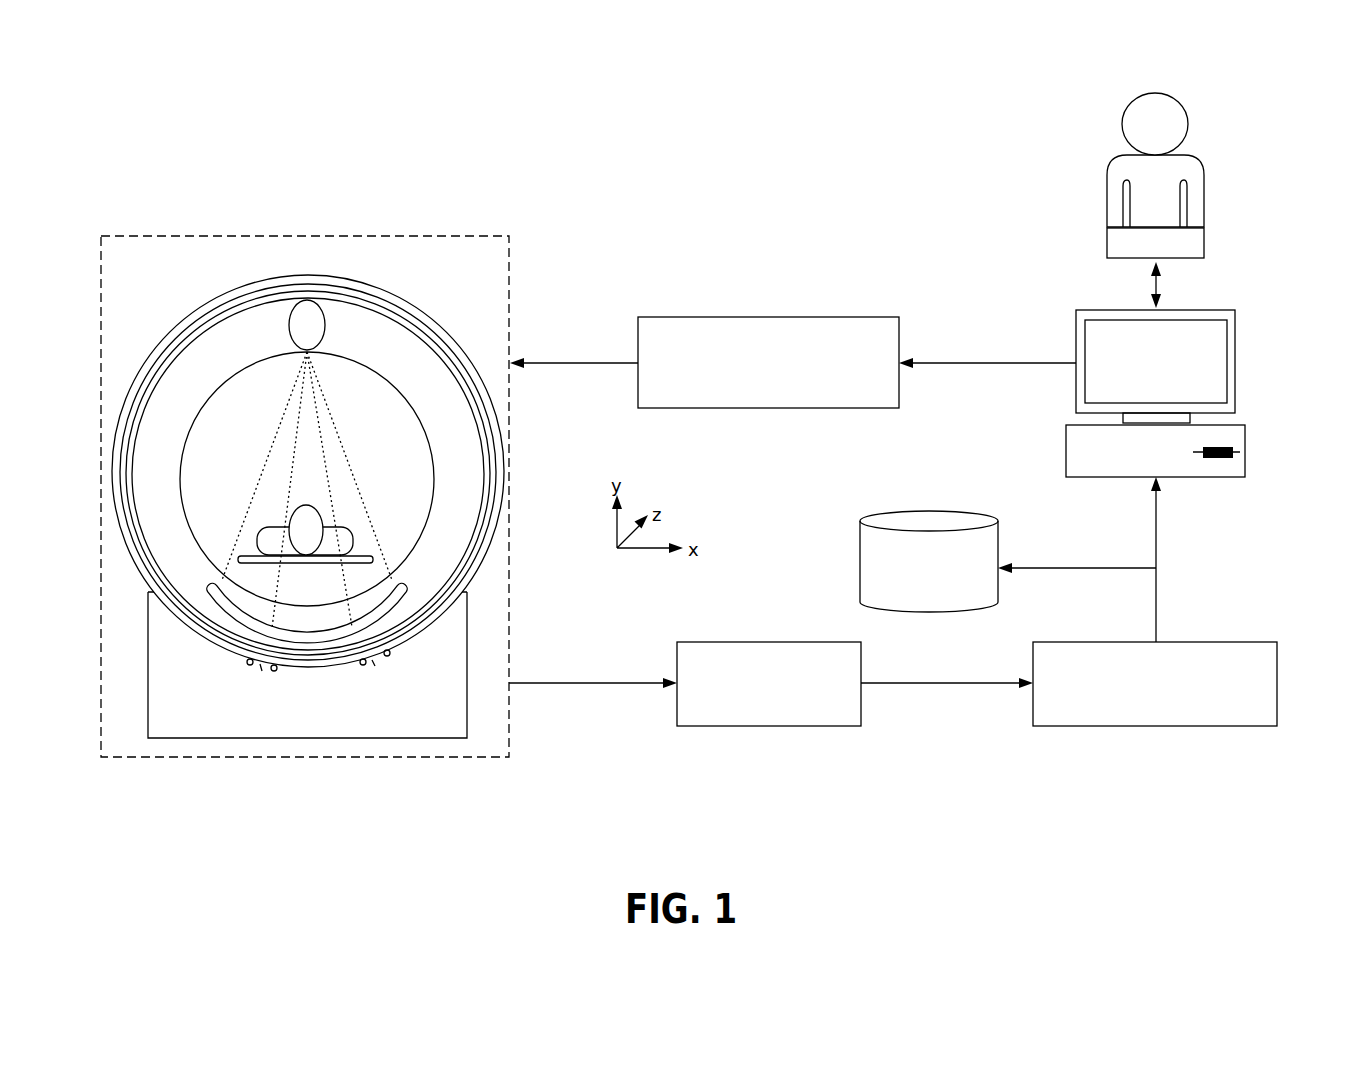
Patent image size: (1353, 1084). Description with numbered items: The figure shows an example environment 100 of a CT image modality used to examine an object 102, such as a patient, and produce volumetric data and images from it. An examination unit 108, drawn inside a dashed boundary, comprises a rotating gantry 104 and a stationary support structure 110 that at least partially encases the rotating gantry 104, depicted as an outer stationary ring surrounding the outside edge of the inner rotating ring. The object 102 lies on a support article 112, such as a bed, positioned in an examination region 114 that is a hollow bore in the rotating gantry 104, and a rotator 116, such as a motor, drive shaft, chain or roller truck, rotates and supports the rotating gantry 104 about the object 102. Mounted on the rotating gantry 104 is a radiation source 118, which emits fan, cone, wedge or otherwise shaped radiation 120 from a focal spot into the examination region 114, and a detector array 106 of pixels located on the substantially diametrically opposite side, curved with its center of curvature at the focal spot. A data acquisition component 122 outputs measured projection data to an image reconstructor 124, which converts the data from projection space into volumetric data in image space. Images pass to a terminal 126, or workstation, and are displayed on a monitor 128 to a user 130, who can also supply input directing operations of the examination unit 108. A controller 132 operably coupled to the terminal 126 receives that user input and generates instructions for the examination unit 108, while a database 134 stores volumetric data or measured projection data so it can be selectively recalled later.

The example environment 100 is at (172, 170).
The object 102 is at (295, 512).
The rotating gantry 104 is at (226, 305).
The detector array 106 is at (230, 623).
The examination unit 108 is at (508, 235).
The support structure 110 is at (411, 300).
The support article 112 is at (247, 555).
The examination region 114 is at (290, 475).
The rotator 116 is at (390, 653).
The radiation source 118 is at (325, 337).
The radiation 120 is at (273, 438).
The data acquisition component 122 is at (770, 726).
The image reconstructor 124 is at (1243, 642).
The terminal 126 is at (1245, 425).
The monitor 128 is at (1235, 310).
The user 130 is at (1203, 168).
The controller 132 is at (770, 317).
The database 134 is at (930, 510).